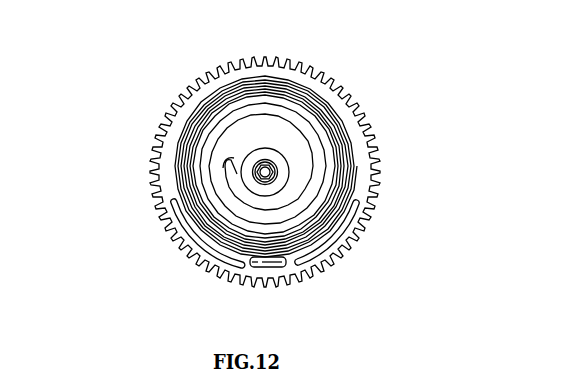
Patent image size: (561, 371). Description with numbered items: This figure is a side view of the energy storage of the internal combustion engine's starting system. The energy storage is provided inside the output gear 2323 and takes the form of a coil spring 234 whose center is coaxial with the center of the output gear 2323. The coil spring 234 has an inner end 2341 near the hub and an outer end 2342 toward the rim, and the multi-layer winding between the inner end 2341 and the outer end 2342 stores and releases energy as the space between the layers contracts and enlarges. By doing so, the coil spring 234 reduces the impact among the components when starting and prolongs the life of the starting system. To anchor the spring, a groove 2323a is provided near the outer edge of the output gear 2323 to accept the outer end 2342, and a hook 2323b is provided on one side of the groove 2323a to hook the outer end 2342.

The output gear 2323 is at (188, 107).
The groove 2323a is at (253, 263).
The hook 2323b is at (280, 257).
The coil spring 234 is at (320, 117).
The inner end 2341 is at (229, 168).
The outer end 2342 is at (287, 263).